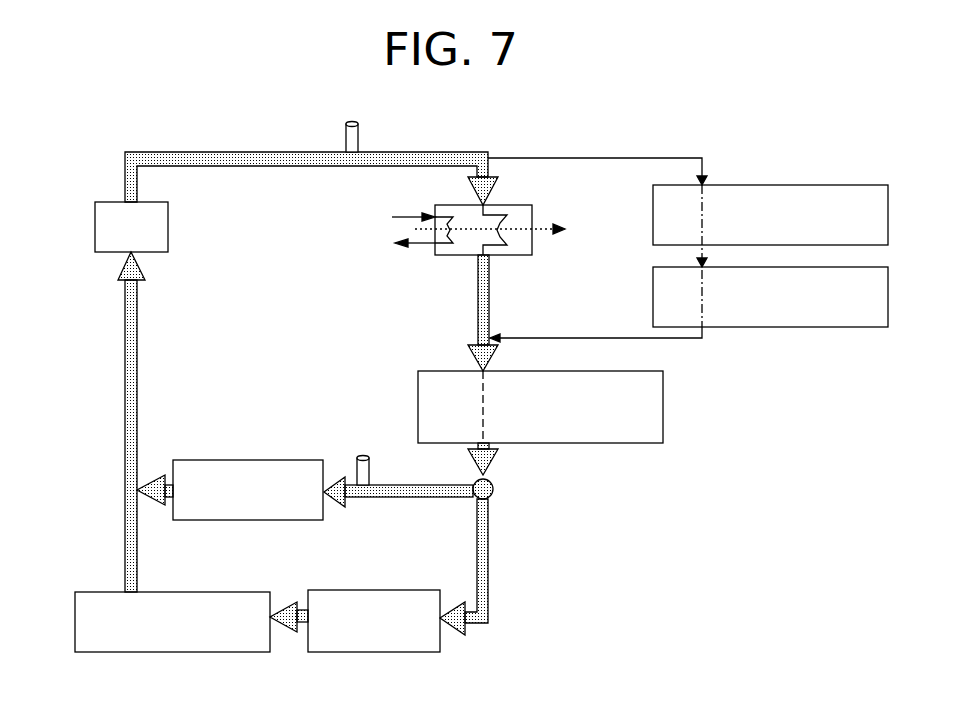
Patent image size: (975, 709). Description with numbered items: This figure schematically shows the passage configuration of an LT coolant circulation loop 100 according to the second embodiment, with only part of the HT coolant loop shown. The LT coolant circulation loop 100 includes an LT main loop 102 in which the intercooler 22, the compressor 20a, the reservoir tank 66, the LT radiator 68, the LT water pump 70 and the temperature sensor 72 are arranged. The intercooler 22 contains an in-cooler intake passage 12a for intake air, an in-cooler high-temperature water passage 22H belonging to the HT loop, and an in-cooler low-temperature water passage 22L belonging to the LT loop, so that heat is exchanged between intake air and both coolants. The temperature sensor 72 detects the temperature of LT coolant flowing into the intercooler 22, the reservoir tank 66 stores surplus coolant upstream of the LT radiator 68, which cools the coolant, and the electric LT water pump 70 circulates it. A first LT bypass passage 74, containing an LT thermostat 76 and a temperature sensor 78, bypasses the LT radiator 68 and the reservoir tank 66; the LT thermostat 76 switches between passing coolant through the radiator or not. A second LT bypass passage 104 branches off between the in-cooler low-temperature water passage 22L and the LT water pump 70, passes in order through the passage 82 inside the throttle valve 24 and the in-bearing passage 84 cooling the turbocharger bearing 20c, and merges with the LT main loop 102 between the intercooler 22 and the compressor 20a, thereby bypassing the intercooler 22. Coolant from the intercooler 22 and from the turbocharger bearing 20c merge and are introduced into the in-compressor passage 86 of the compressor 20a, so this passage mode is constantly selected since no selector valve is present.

The LT coolant circulation loop 100 is at (640, 120).
The LT main loop 102 is at (438, 150).
The second LT bypass passage 104 is at (558, 158).
The temperature sensor 72 is at (346, 140).
The LT water pump 70 is at (95, 226).
The throttle valve 24 is at (775, 180).
The passage inside the throttle valve 82 is at (703, 196).
The turbocharger bearing 20c is at (758, 334).
The in-bearing passage 84 is at (703, 308).
The intercooler 22 is at (420, 260).
The in-cooler high-temperature water passage 22H is at (441, 255).
The in-cooler low-temperature water passage 22L is at (522, 238).
The in-cooler intake passage 12a is at (518, 215).
The compressor 20a is at (408, 372).
The in-compressor passage 86 is at (485, 416).
The first LT bypass passage 74 is at (405, 500).
The temperature sensor 78 is at (360, 458).
The LT thermostat 76 is at (203, 460).
The LT radiator 68 is at (93, 592).
The reservoir tank 66 is at (372, 590).